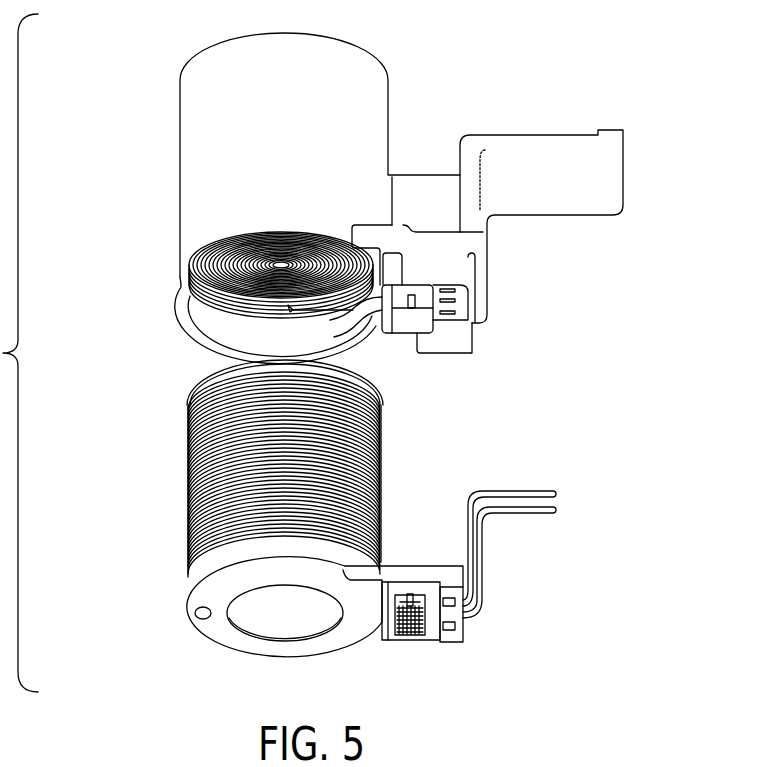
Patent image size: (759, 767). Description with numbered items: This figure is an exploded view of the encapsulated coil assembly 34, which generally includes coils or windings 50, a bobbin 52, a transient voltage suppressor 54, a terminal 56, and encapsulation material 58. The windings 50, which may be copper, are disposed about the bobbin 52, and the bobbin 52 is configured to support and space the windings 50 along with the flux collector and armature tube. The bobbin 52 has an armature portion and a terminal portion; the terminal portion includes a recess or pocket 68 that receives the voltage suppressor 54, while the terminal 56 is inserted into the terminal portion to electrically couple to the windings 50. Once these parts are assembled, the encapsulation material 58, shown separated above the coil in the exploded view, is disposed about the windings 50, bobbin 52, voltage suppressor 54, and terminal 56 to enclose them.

The encapsulated coil assembly 34 is at (122, 84).
The encapsulation material 58 is at (372, 108).
The windings 50 is at (190, 492).
The bobbin 52 is at (233, 642).
The transient voltage suppressor 54 is at (412, 633).
The recess or pocket 68 is at (417, 603).
The terminal 56 is at (517, 488).